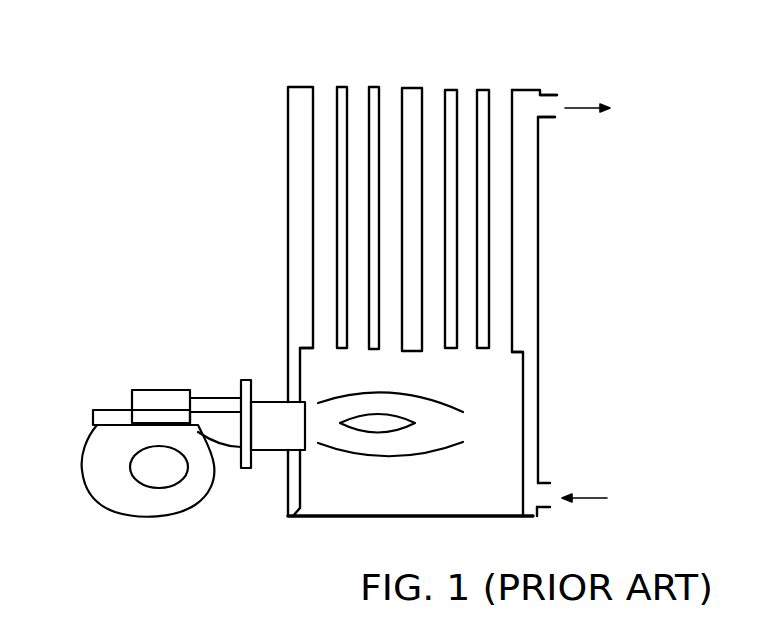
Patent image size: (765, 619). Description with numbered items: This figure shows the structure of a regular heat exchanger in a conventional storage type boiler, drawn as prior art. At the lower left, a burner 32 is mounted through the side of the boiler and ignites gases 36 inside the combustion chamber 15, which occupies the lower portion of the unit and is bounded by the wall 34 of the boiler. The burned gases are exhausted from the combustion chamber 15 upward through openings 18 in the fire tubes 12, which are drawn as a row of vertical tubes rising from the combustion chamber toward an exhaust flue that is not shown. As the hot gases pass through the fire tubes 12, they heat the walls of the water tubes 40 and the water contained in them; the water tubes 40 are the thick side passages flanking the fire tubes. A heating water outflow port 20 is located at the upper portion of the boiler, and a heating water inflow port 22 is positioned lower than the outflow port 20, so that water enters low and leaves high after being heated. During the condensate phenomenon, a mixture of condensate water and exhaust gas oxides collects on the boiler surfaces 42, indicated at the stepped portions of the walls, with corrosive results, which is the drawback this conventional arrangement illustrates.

The fire tubes 12 is at (422, 265).
The combustion chamber 15 is at (475, 488).
The openings 18 is at (435, 97).
The heating water outflow port 20 is at (548, 92).
The heating water inflow port 22 is at (540, 483).
The burner 32 is at (97, 458).
The wall 34 is at (538, 253).
The gases 36 is at (352, 447).
The water tubes 40 is at (292, 260).
The boiler surfaces 42 is at (310, 321).